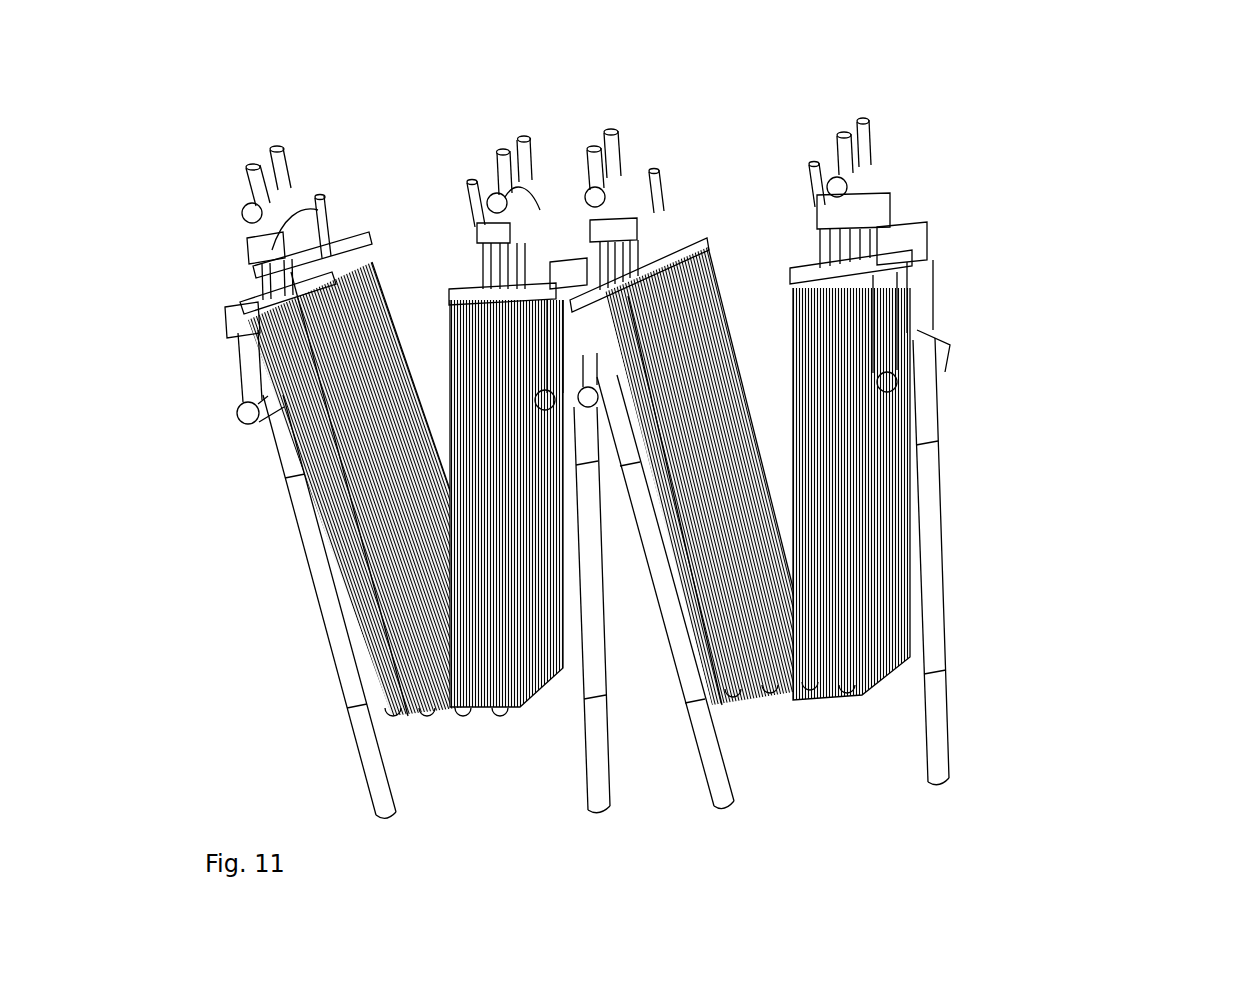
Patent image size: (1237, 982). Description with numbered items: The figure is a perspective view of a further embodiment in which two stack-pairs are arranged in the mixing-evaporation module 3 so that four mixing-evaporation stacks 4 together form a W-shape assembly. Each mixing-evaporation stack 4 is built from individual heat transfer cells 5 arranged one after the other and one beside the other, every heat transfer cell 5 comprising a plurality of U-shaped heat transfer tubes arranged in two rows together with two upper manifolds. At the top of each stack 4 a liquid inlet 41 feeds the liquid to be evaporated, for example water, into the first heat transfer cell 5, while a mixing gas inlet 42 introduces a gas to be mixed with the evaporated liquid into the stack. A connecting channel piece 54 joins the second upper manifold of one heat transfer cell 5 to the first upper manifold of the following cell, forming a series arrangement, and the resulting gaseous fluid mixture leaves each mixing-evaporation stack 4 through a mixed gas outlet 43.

The mixing-evaporation module 3 is at (997, 525).
The mixing-evaporation stack 4 is at (483, 433).
The heat transfer cell 5 is at (450, 780).
The liquid inlet 41 is at (310, 213).
The mixing gas inlet 42 is at (268, 175).
The mixed gas outlet 43 is at (380, 803).
The connecting channel piece 54 is at (270, 247).